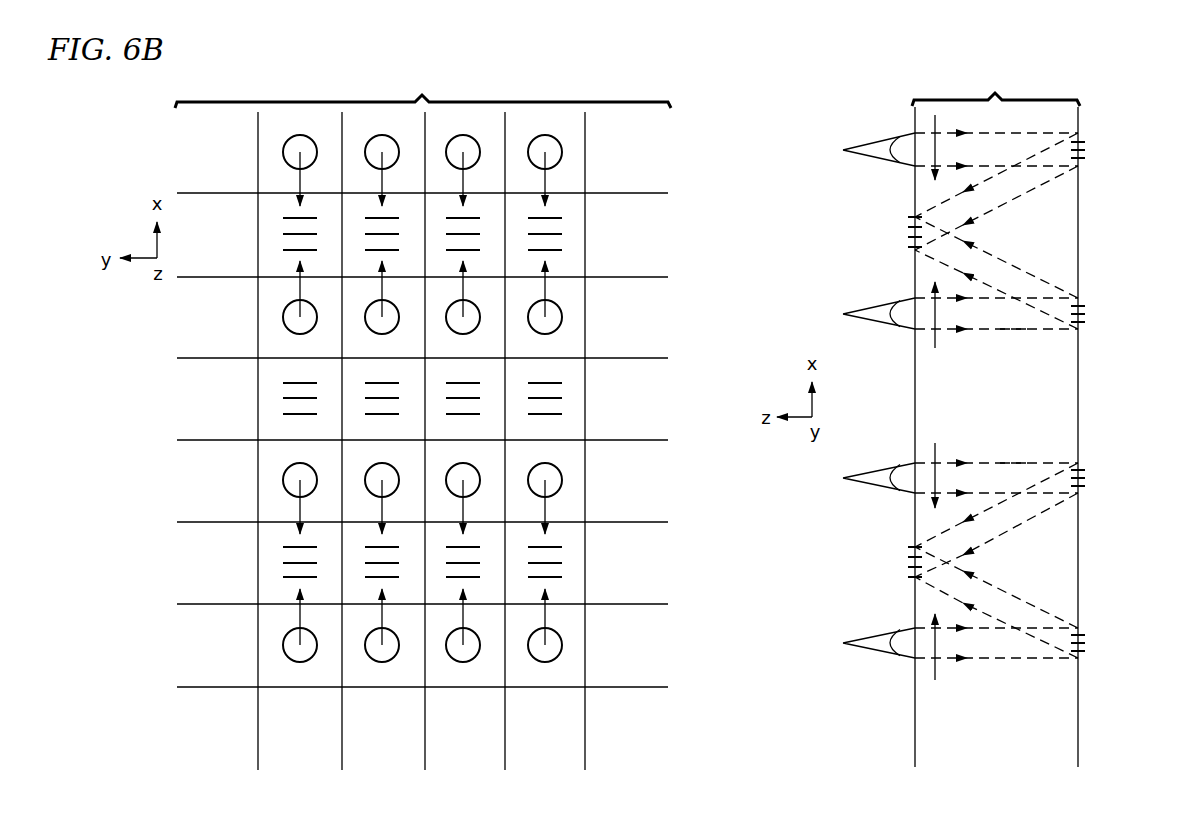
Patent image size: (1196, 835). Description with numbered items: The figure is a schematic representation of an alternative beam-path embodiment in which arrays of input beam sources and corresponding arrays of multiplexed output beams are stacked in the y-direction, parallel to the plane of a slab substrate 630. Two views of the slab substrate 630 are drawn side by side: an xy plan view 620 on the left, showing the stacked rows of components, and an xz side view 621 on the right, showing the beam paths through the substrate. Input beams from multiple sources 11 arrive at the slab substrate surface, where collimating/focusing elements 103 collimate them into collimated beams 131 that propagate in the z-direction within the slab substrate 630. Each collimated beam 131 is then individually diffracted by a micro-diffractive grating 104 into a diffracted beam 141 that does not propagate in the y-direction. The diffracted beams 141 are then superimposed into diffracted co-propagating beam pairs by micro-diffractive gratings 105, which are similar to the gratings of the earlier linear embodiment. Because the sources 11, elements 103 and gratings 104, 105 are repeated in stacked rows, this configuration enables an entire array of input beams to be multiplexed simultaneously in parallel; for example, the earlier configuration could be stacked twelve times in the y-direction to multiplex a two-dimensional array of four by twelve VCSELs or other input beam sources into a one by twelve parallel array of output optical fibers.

The source 11 is at (843, 150).
The collimating/focusing element 103 is at (283, 152).
The micro-diffractive grating 104 is at (1085, 143).
The micro-diffractive grating 105 is at (562, 236).
The collimated beam 131 is at (1012, 331).
The diffracted beam 141 is at (300, 180).
The xy plan view 620 is at (423, 89).
The xz side view 621 is at (996, 86).
The slab substrate 630 is at (630, 403).